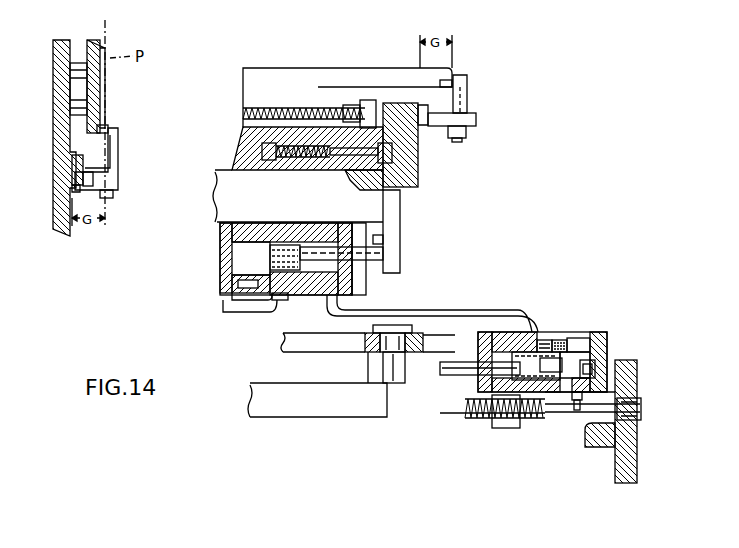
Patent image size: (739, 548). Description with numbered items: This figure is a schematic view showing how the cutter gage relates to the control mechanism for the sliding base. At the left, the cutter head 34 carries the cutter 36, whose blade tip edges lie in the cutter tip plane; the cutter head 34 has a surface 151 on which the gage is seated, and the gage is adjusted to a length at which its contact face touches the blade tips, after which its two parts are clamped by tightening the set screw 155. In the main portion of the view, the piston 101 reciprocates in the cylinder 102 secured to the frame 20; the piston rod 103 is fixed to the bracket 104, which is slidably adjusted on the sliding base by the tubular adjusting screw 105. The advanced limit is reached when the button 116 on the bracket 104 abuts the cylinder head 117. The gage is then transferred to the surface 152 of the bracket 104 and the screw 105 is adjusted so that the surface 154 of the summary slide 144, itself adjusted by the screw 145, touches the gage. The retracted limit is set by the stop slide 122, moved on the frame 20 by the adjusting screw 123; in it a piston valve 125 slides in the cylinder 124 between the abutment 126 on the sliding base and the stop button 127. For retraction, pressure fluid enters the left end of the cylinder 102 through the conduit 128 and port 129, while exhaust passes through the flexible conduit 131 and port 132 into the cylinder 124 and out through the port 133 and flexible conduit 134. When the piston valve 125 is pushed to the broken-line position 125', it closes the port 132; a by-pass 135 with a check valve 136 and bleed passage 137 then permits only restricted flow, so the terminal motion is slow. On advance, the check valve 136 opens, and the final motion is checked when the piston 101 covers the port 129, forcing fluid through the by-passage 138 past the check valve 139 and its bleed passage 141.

The frame 20 is at (630, 449).
The cutter head 34 is at (63, 93).
The cutter 36 is at (92, 40).
The piston 101 is at (270, 256).
The cylinder 102 is at (267, 238).
The piston rod 103 is at (361, 262).
The bracket 104 is at (395, 222).
The adjusting screw 105 is at (311, 156).
The button 116 is at (384, 240).
The cylinder head 117 is at (352, 278).
The stop slide 122 is at (598, 338).
The adjusting screw 123 is at (600, 391).
The cylinder 124 is at (600, 406).
The piston valve 125 is at (488, 422).
The broken-line position of piston valve 125' is at (508, 424).
The abutment 126 is at (403, 366).
The stop button 127 is at (596, 368).
The conduit 128 is at (262, 312).
The port 129 is at (278, 302).
The flexible conduit 131 is at (470, 312).
The port 132 is at (544, 340).
The port 133 is at (600, 426).
The flexible conduit 134 is at (577, 410).
The by-pass 135 is at (592, 340).
The check valve 136 is at (578, 340).
The bleed passage 137 is at (560, 340).
The by-passage 138 is at (232, 286).
The check valve 139 is at (240, 294).
The bleed passage 141 is at (270, 259).
The summary slide 144 is at (293, 80).
The screw 145 is at (318, 120).
The surface 151 is at (75, 188).
The surface 152 is at (452, 138).
The surface 154 is at (467, 85).
The set screw 155 is at (108, 196).